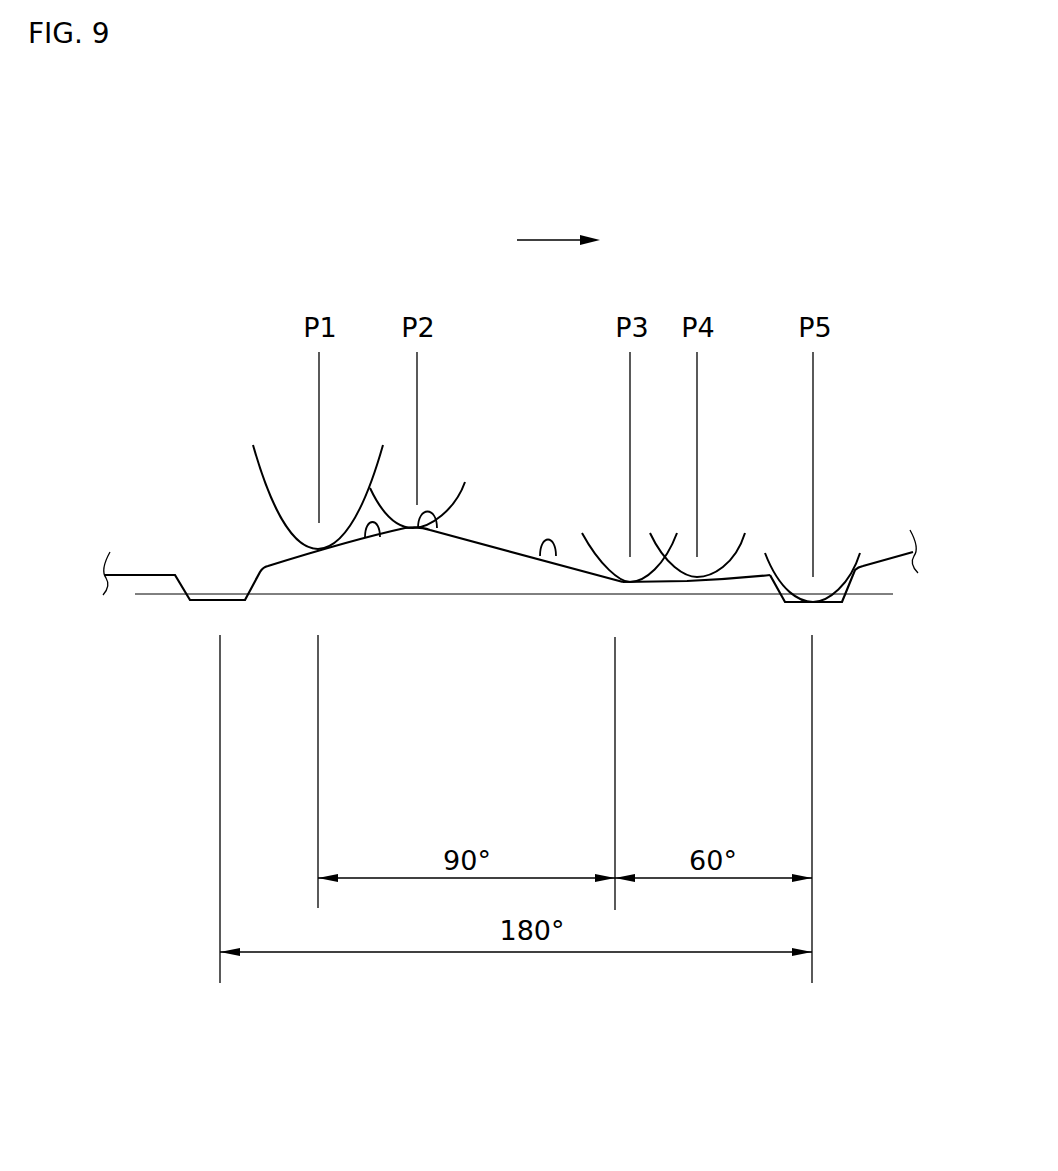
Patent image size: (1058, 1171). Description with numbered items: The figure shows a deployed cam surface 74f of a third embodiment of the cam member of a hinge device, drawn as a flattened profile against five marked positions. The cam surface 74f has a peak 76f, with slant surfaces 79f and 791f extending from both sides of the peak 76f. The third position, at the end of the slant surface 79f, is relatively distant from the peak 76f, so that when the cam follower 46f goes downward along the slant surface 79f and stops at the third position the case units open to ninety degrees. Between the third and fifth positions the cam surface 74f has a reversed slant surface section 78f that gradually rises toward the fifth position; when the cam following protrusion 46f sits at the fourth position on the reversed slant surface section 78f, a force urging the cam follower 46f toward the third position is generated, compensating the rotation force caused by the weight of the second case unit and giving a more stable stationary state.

The cam follower 46f is at (263, 482).
The cam surface 74f is at (513, 518).
The peak 76f is at (437, 528).
The reversed slant surface section 78f is at (682, 580).
The slant surface 79f is at (556, 556).
The slant surface 791f is at (380, 537).